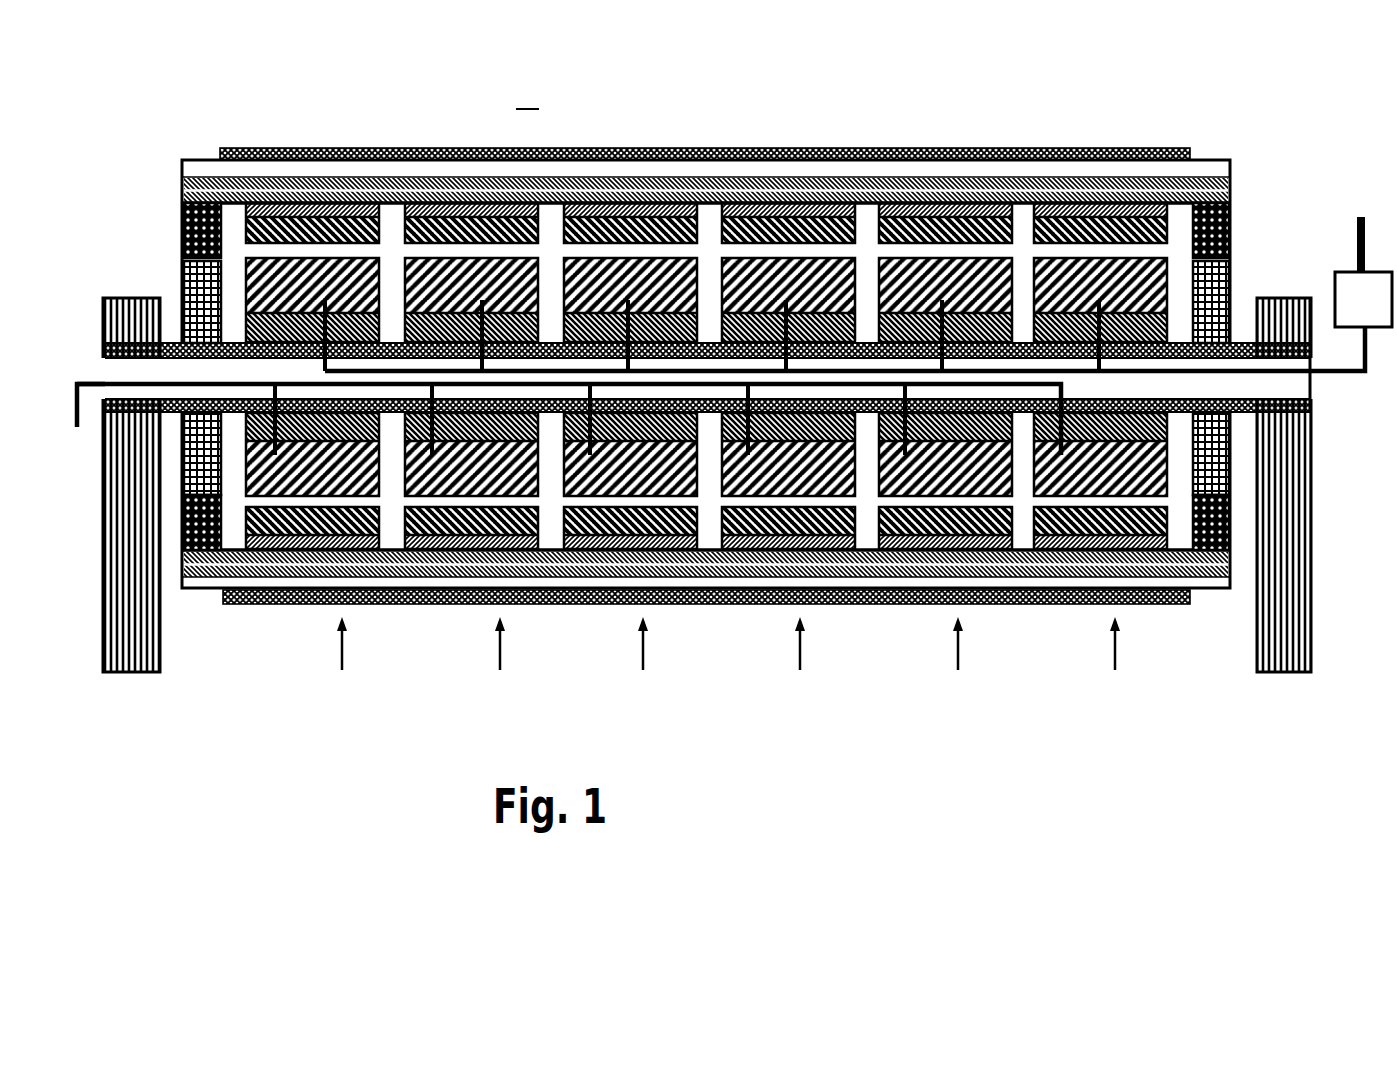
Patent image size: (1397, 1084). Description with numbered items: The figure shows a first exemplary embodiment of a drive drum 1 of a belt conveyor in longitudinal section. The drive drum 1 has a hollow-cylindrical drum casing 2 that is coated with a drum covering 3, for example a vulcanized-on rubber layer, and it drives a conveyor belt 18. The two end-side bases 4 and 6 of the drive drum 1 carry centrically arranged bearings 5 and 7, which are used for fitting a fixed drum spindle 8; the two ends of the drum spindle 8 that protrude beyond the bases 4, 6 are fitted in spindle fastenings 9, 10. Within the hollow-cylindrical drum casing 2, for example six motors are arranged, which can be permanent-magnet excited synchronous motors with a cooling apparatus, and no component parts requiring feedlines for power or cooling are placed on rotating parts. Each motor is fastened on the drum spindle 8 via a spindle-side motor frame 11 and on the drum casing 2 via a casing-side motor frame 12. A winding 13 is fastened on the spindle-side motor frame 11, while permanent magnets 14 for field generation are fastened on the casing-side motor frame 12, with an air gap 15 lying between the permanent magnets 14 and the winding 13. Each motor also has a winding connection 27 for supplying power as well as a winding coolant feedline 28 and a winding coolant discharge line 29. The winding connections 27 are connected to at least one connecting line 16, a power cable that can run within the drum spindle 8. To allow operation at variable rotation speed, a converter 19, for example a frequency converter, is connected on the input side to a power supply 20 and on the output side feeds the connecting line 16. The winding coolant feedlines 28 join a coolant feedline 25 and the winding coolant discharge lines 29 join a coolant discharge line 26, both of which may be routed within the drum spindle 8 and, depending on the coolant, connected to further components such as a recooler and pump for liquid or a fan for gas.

The drive drum 1 is at (716, 396).
The drum casing 2 is at (577, 190).
The drum covering 3 is at (627, 158).
The base 4 is at (198, 588).
The bearing 5 is at (223, 205).
The base 6 is at (1187, 185).
The bearing 7 is at (1203, 317).
The drum spindle 8 is at (170, 367).
The spindle fastening 9 is at (132, 297).
The spindle fastening 10 is at (1270, 298).
The spindle-side motor frame 11 is at (312, 428).
The casing-side motor frame 12 is at (338, 195).
The winding 13 is at (423, 277).
The permanent magnets 14 is at (368, 243).
The air gap 15 is at (371, 240).
The connecting line 16 is at (1335, 368).
The conveyor belt 18 is at (689, 140).
The converter 19 is at (1353, 297).
The power supply 20 is at (1361, 217).
The coolant feedline 25 is at (92, 383).
The coolant discharge line 26 is at (693, 362).
The winding connection 27 is at (788, 300).
The winding coolant feedline 28 is at (590, 419).
The winding coolant discharge line 29 is at (903, 450).